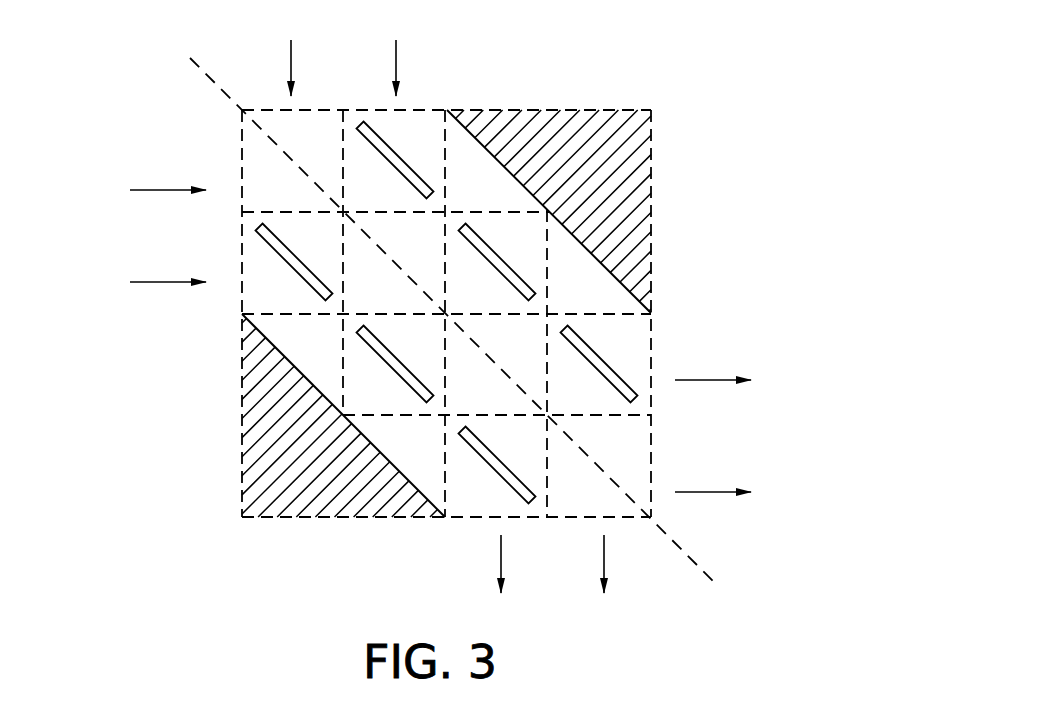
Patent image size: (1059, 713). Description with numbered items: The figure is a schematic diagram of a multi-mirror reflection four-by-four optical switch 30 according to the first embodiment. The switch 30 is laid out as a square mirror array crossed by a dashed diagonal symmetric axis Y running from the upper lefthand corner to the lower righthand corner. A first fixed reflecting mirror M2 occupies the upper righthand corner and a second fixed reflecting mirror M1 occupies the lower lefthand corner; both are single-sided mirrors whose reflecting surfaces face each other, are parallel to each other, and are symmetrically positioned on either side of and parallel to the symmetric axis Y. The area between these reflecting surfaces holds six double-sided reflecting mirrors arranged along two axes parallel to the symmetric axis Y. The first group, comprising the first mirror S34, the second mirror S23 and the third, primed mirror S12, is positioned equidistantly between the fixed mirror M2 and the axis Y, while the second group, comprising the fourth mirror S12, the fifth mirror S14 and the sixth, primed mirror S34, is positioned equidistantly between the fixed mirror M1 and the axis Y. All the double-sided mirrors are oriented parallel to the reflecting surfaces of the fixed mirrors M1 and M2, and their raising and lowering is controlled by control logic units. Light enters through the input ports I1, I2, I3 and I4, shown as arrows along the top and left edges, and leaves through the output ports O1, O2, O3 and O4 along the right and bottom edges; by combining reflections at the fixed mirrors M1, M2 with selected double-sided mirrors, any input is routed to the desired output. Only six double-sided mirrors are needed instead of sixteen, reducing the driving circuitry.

The multi-mirror reflection 4-by-4 optical switch 30 is at (693, 120).
The second fixed reflecting mirror M1 is at (245, 463).
The first fixed reflecting mirror M2 is at (643, 173).
The double-sided reflecting mirror S12 is at (447, 320).
The double-sided reflecting mirror S34 is at (446, 320).
The second double-sided reflecting mirror S23 is at (497, 269).
The fifth double-sided reflecting mirror S14 is at (395, 371).
The input port 1 I1 is at (289, 51).
The input port 2 I2 is at (149, 284).
The input port 3 I3 is at (149, 191).
The input port 4 I4 is at (394, 51).
The output port 1 O1 is at (736, 383).
The output port 2 O2 is at (612, 583).
The output port 3 O3 is at (509, 583).
The output port 4 O4 is at (734, 495).
The symmetric axis Y is at (167, 48).